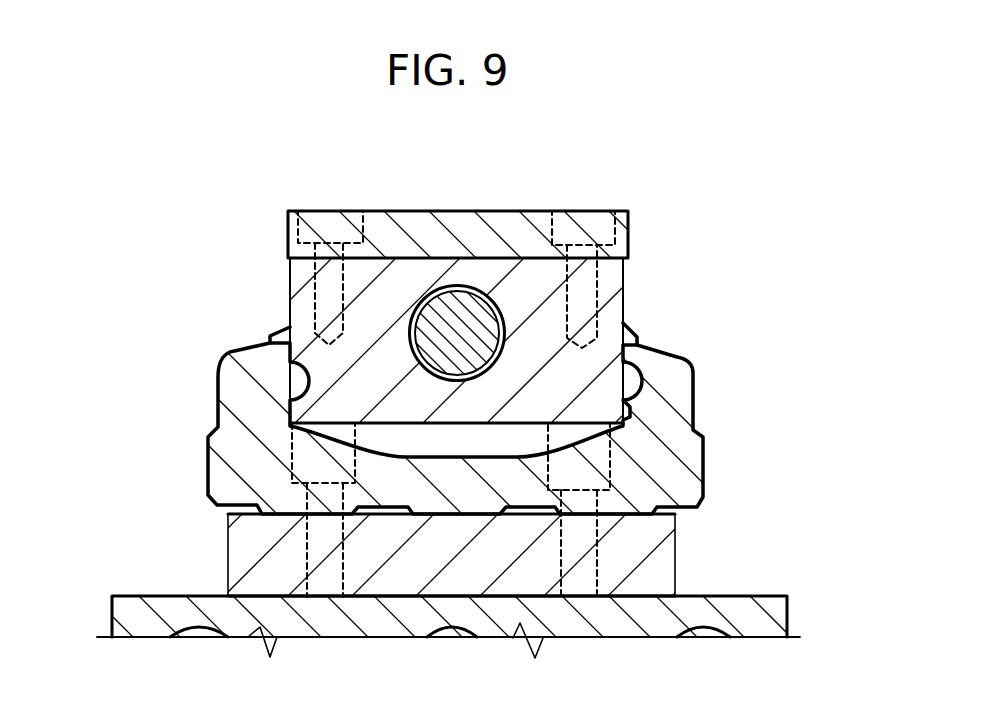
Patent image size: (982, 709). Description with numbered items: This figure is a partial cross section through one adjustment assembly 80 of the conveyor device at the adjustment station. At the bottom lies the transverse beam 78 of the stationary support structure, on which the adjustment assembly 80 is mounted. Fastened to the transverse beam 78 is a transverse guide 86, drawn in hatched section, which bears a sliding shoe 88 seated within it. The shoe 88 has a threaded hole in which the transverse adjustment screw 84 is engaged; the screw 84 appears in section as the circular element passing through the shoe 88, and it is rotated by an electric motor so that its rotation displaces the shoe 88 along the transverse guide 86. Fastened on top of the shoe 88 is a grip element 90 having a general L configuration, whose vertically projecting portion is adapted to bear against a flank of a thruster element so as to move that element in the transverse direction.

The transverse beam 78 is at (648, 557).
The adjustment assembly 80 is at (141, 334).
The transverse adjustment screw 84 is at (450, 333).
The transverse guide 86 is at (670, 460).
The sliding shoe 88 is at (603, 352).
The grip element 90 is at (537, 212).